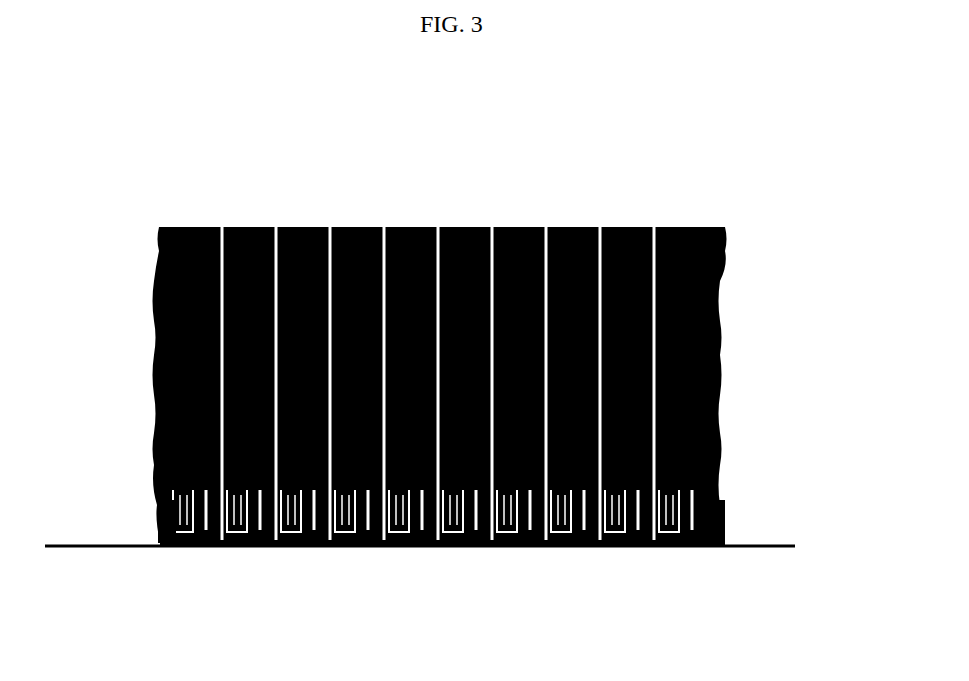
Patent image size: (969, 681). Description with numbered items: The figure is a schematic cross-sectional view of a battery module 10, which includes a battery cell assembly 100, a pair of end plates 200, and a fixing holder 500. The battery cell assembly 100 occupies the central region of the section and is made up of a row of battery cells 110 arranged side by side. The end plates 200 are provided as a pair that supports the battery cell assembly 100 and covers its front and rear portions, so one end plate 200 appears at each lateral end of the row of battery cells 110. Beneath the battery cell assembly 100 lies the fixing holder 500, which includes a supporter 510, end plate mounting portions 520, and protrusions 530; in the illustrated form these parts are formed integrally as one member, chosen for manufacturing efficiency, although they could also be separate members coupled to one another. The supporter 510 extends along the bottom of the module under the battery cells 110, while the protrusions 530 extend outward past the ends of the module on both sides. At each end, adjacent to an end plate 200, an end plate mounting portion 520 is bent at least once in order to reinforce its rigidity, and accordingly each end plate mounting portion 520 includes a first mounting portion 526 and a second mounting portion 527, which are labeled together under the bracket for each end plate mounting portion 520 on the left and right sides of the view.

The battery module 10 is at (117, 112).
The battery cell assembly 100 is at (376, 175).
The battery cell 110 is at (212, 227).
The end plate 200 is at (157, 280).
The fixing holder 500 is at (439, 622).
The supporter 510 is at (403, 548).
The end plate mounting portion 520 is at (101, 630).
The first mounting portion 526 is at (165, 510).
The second mounting portion 527 is at (160, 507).
The protrusion 530 is at (107, 547).